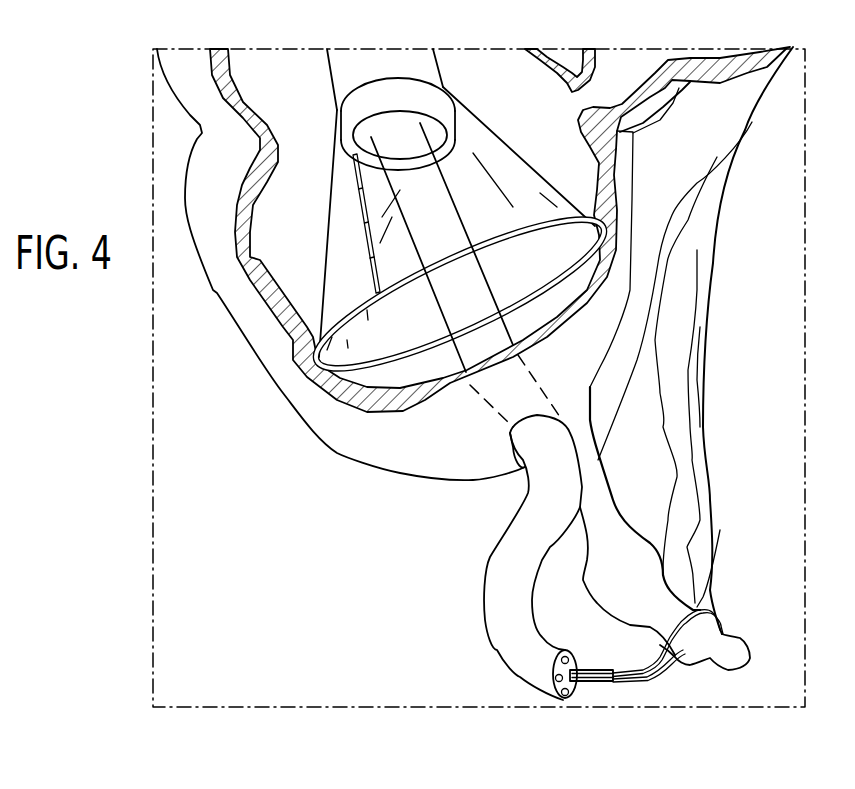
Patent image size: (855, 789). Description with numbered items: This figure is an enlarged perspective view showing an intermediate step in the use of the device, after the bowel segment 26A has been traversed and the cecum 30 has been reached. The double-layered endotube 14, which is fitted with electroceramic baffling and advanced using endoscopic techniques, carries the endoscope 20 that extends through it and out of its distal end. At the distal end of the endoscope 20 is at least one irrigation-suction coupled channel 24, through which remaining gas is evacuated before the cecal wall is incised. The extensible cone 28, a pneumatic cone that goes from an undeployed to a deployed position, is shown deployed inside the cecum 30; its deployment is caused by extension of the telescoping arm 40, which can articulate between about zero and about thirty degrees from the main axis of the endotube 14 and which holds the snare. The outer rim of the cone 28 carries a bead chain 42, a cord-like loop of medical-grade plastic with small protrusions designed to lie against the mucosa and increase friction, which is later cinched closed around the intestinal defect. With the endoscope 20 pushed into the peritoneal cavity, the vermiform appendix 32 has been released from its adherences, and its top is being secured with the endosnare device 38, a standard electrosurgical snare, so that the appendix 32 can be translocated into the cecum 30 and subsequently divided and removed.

The endotube 14 is at (347, 68).
The endoscope 20 is at (422, 167).
The irrigation-suction coupled channel 24 is at (583, 687).
The heart chamber wall 26A is at (212, 154).
The extensible cone 28 is at (333, 242).
The cecum 30 is at (358, 440).
The vermiform appendix 32 is at (727, 647).
The endosnare device 38 is at (675, 655).
The telescoping arm 40 is at (372, 260).
The bead chain 42 is at (415, 362).